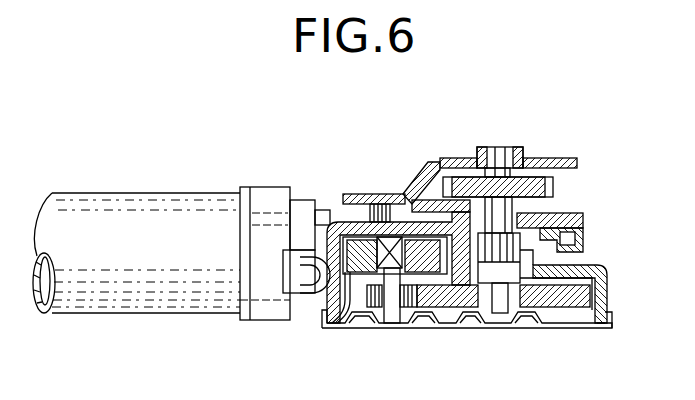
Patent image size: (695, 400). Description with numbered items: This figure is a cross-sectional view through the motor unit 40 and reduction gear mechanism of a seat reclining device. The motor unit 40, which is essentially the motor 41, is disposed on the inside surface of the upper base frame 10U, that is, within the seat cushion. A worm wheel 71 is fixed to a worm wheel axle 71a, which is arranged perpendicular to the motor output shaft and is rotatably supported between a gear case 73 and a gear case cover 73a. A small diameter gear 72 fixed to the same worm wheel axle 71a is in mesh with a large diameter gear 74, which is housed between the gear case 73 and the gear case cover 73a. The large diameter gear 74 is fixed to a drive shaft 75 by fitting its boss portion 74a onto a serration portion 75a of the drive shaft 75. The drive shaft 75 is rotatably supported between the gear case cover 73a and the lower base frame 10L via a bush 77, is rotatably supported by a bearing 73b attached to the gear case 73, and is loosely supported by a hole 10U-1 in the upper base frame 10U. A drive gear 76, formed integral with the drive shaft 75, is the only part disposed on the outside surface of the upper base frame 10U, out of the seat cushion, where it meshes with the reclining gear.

The motor 41 is at (98, 218).
The motor unit 40 is at (271, 172).
The worm wheel 71 is at (357, 237).
The worm wheel axle 71a is at (348, 325).
The small diameter gear 72 is at (420, 326).
The upper base frame 10U is at (425, 188).
The hole 10U-1 is at (447, 160).
The lower base frame 10L is at (467, 157).
The bush 77 is at (527, 149).
The drive gear 76 is at (556, 185).
The drive shaft 75 is at (585, 216).
The serration portion 75a is at (585, 243).
The boss portion 74a is at (590, 263).
The large diameter gear 74 is at (565, 326).
The gear case 73 is at (612, 298).
The bearing 73b is at (527, 318).
The gear case cover 73a is at (611, 324).